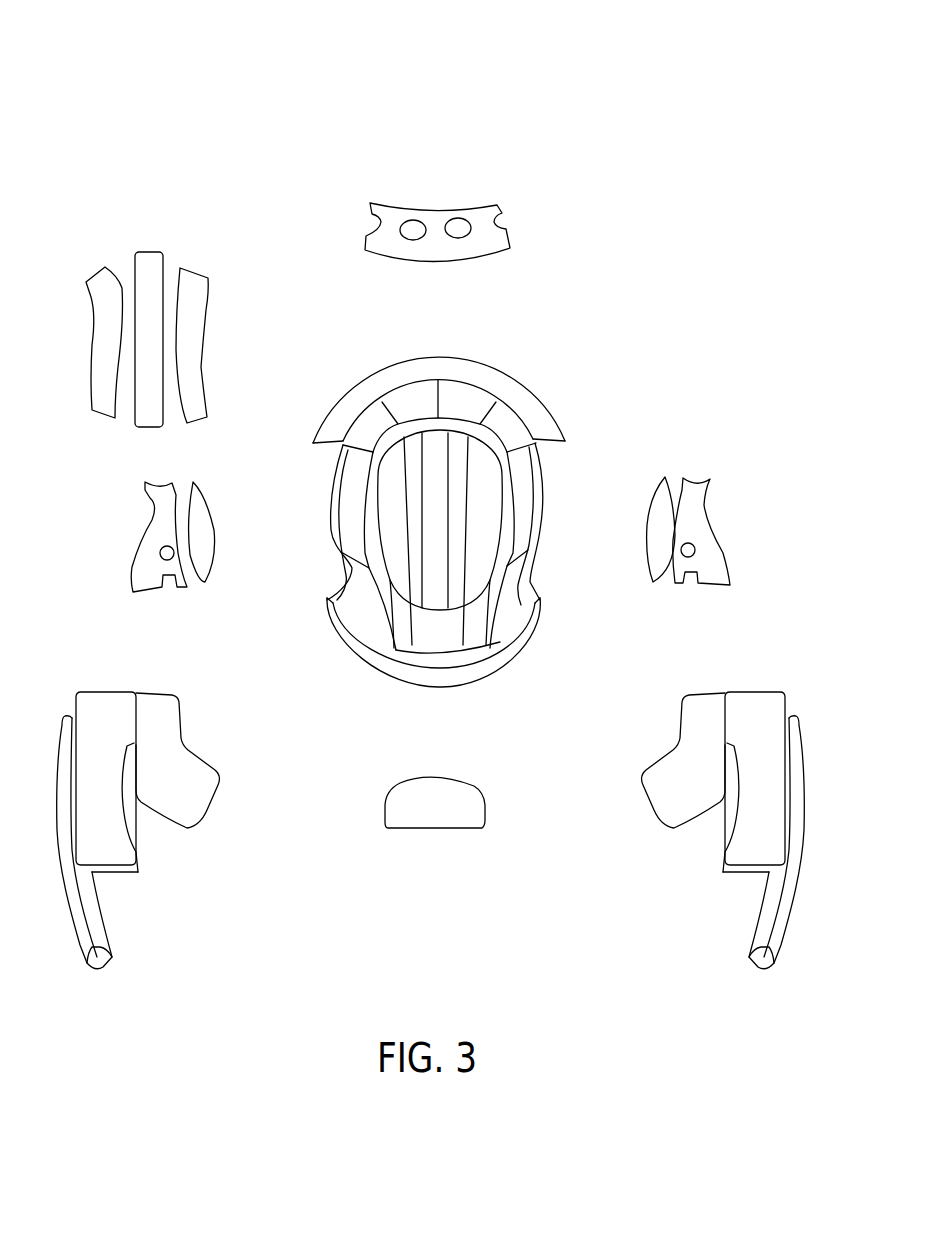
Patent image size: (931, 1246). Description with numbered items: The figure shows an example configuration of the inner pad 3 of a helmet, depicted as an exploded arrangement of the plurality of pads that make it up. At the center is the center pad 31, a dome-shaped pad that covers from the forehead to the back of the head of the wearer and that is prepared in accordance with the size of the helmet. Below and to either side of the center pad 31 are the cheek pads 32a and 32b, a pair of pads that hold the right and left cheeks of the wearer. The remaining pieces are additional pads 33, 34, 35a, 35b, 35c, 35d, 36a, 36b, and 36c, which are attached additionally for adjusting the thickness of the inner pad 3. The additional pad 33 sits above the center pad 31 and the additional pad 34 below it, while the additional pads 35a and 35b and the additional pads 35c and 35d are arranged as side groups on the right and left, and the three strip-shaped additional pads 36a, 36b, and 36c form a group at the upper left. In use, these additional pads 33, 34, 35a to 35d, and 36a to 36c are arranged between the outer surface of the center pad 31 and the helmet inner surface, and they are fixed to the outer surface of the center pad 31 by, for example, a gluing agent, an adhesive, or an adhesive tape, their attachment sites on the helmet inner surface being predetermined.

The inner pad 3 is at (437, 88).
The center pad 31 is at (500, 382).
The cheek pad 32a is at (762, 688).
The cheek pad 32b is at (113, 690).
The additional pad 33 is at (477, 214).
The additional pad 34 is at (462, 792).
The additional pad 35a is at (708, 490).
The additional pad 35b is at (667, 480).
The additional pad 35c is at (200, 486).
The additional pad 35d is at (158, 507).
The additional pad 36a is at (148, 258).
The additional pad 36b is at (206, 278).
The additional pad 36c is at (104, 266).